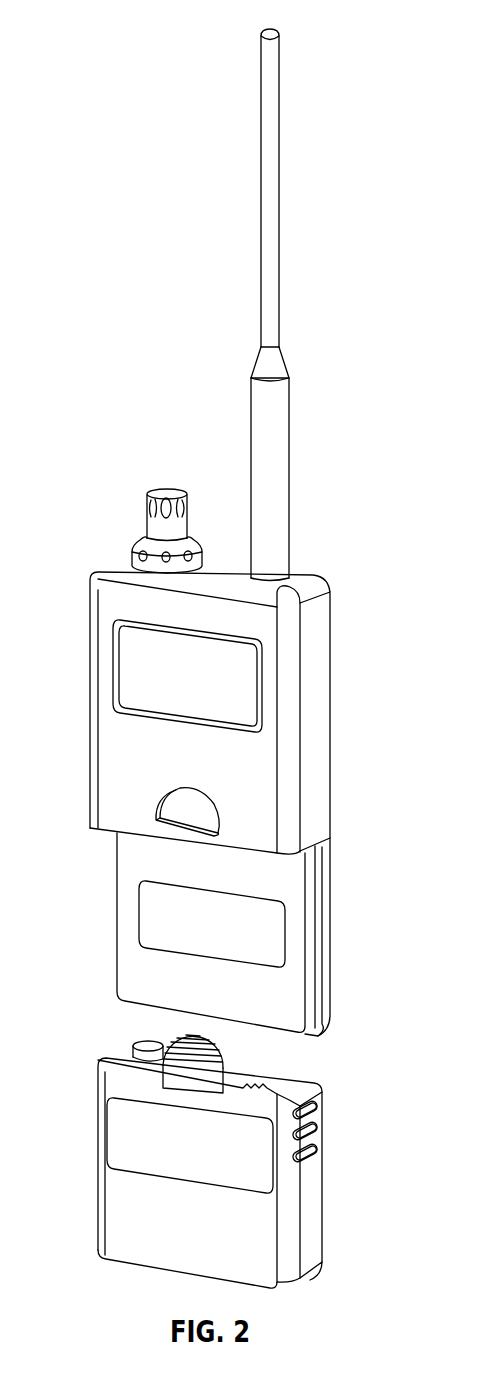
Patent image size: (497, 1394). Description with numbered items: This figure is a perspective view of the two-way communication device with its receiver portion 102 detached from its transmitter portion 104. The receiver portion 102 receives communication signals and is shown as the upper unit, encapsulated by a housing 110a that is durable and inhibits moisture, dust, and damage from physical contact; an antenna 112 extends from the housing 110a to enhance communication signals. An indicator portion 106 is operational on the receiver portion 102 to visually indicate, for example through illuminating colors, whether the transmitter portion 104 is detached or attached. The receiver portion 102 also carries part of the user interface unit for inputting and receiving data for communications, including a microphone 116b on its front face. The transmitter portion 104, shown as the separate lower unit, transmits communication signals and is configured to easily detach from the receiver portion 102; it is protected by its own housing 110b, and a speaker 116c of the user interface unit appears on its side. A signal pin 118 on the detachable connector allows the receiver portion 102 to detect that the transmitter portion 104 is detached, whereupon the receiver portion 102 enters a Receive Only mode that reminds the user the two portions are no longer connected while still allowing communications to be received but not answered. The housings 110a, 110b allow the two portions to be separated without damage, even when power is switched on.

The receiver portion 102 is at (96, 760).
The transmitter portion 104 is at (102, 1203).
The indicator portion 106 is at (147, 501).
The housing 110a is at (273, 797).
The housing 110b is at (208, 1222).
The antenna 112 is at (273, 231).
The microphone 116b is at (234, 675).
The speaker 116c is at (313, 1108).
The signal pin 118 is at (134, 1064).